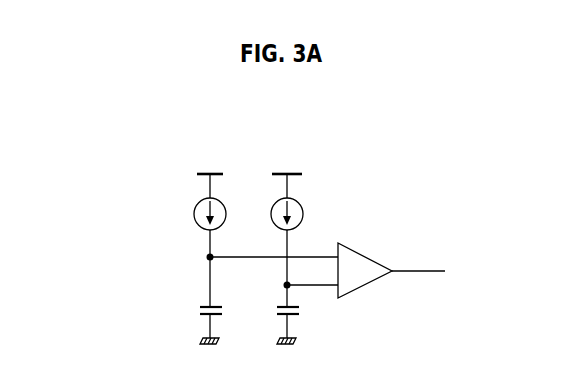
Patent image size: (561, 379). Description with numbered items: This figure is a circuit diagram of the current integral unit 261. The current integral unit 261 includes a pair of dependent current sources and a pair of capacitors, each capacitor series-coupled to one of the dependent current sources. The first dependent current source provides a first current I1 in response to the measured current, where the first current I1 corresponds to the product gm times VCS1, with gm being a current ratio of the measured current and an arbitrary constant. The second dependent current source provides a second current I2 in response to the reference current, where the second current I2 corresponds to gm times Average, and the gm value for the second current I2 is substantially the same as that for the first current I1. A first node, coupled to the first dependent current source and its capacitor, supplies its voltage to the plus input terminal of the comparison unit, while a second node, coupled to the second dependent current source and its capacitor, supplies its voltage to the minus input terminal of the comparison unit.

The current integral unit 261 is at (259, 134).
The first current I1 is at (169, 215).
The second current I2 is at (346, 229).